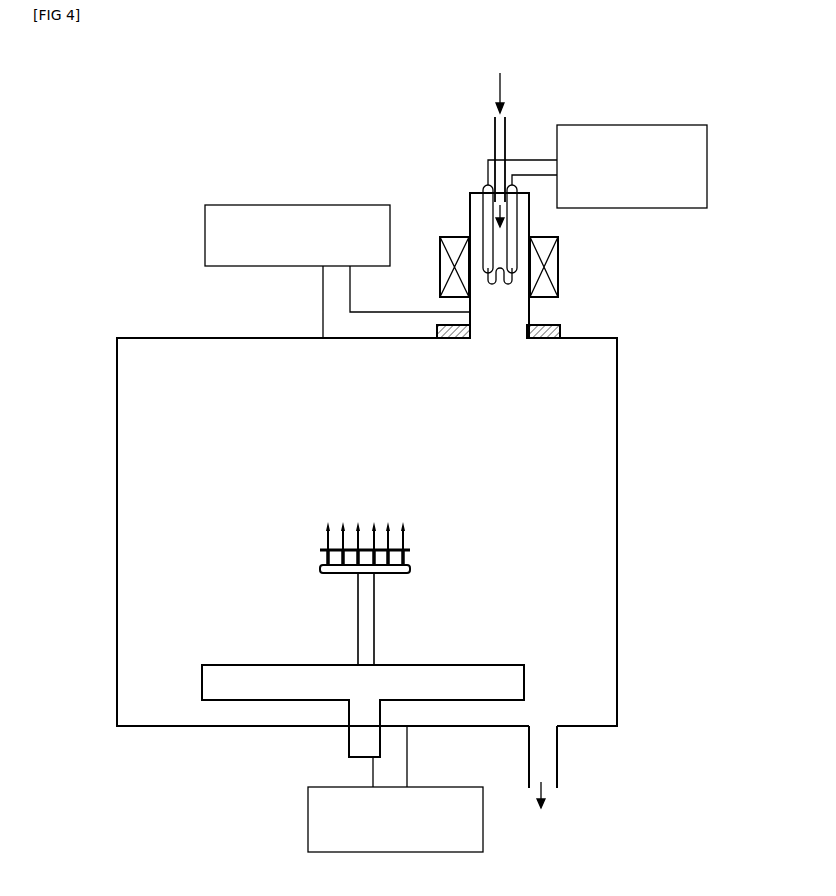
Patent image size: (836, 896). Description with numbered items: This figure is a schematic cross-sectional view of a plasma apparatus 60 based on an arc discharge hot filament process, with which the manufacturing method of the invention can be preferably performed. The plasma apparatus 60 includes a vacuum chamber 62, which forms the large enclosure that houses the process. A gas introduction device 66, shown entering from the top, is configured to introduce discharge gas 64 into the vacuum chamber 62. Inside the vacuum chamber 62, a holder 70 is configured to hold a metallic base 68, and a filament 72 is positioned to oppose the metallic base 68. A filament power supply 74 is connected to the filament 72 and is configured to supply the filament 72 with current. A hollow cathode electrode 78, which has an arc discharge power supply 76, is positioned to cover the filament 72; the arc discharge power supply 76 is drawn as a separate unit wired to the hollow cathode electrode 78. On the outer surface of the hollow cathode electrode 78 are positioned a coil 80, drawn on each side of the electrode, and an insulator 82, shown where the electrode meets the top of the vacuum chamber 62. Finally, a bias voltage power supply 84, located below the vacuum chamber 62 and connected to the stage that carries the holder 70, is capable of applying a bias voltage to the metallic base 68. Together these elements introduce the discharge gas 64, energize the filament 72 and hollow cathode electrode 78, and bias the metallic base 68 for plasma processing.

The plasma apparatus 60 is at (96, 282).
The vacuum chamber 62 is at (619, 511).
The discharge gas 64 is at (504, 87).
The gas introduction device 66 is at (494, 142).
The metallic base 68 is at (314, 527).
The holder 70 is at (320, 569).
The filament 72 is at (510, 290).
The filament power supply 74 is at (708, 168).
The arc discharge power supply 76 is at (204, 227).
The hollow cathode electrode 78 is at (468, 199).
The coil 80 is at (458, 237).
The insulator 82 is at (437, 331).
The bias voltage power supply 84 is at (308, 821).